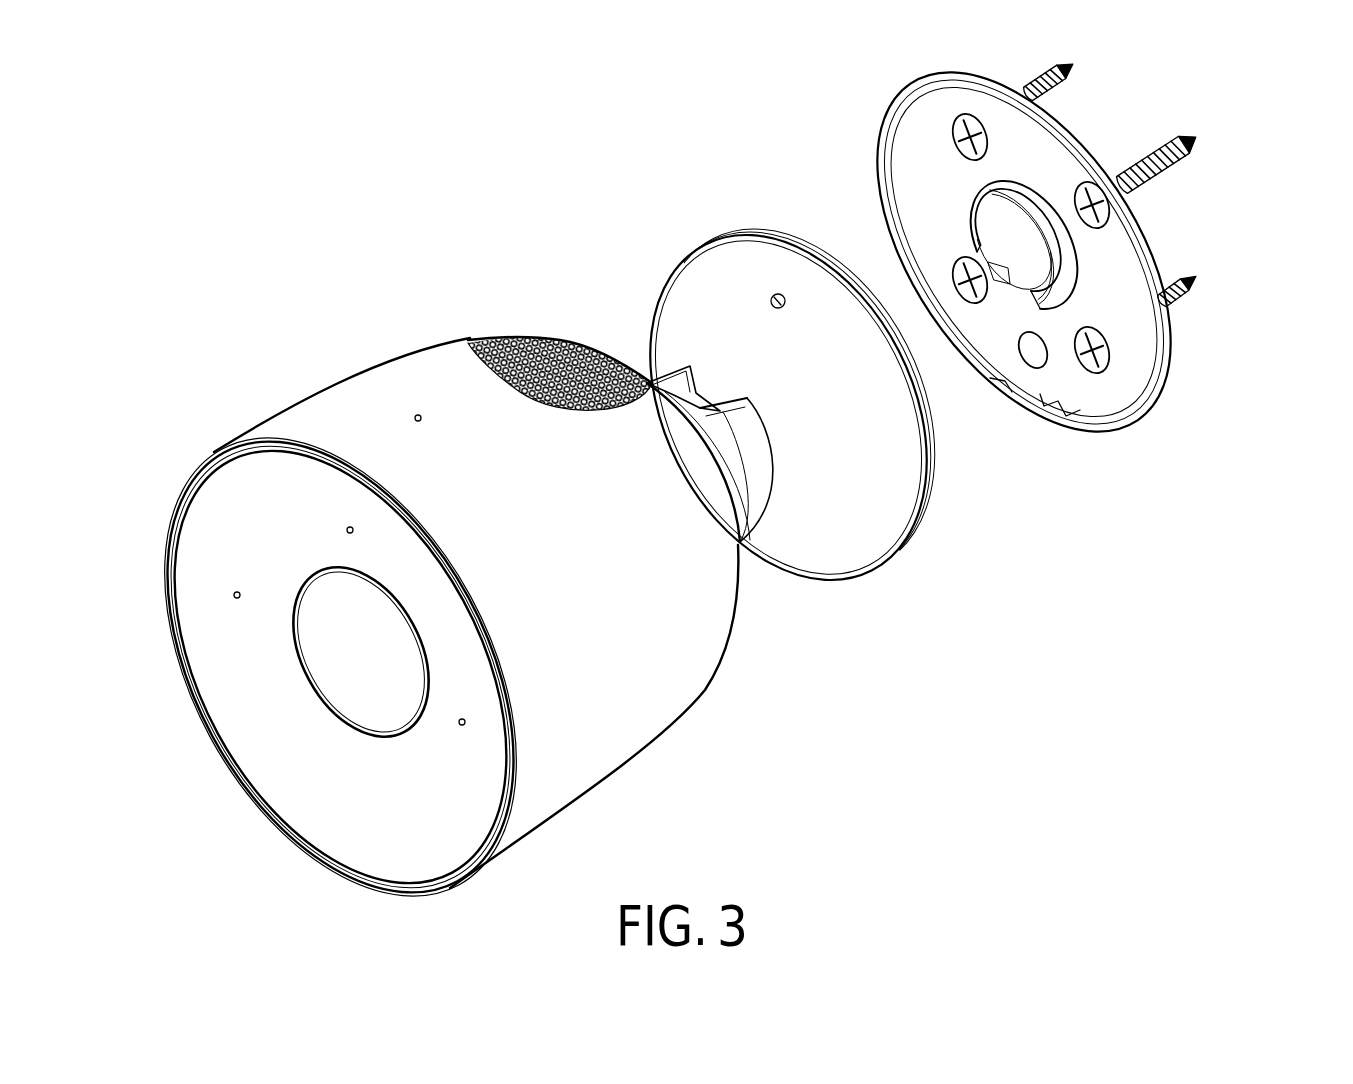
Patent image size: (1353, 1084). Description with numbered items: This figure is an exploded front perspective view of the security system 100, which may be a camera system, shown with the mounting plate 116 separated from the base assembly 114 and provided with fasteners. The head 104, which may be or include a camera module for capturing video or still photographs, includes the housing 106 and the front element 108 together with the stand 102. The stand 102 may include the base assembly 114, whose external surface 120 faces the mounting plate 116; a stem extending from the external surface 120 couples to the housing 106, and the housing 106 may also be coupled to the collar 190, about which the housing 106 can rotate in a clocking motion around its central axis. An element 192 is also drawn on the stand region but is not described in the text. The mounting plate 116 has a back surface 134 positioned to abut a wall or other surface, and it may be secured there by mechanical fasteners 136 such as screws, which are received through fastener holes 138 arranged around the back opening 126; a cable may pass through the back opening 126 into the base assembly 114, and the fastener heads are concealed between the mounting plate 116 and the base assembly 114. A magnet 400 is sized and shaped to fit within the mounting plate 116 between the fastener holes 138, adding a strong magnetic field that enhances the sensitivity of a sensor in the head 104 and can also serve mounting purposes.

The security system 100 is at (690, 488).
The stand 102 is at (776, 426).
The head 104 is at (421, 566).
The housing 106 is at (675, 668).
The front element 108 is at (212, 545).
The base assembly 114 is at (792, 426).
The mounting plate 116 is at (1053, 278).
The external surface 120 is at (859, 449).
The back opening 126 is at (1028, 240).
The back surface 134 is at (1150, 232).
The mechanical fasteners 136 is at (1163, 173).
The fastener holes 138 is at (1023, 282).
The collar 190 is at (757, 500).
The clip 192 is at (702, 378).
The magnet 400 is at (1033, 353).